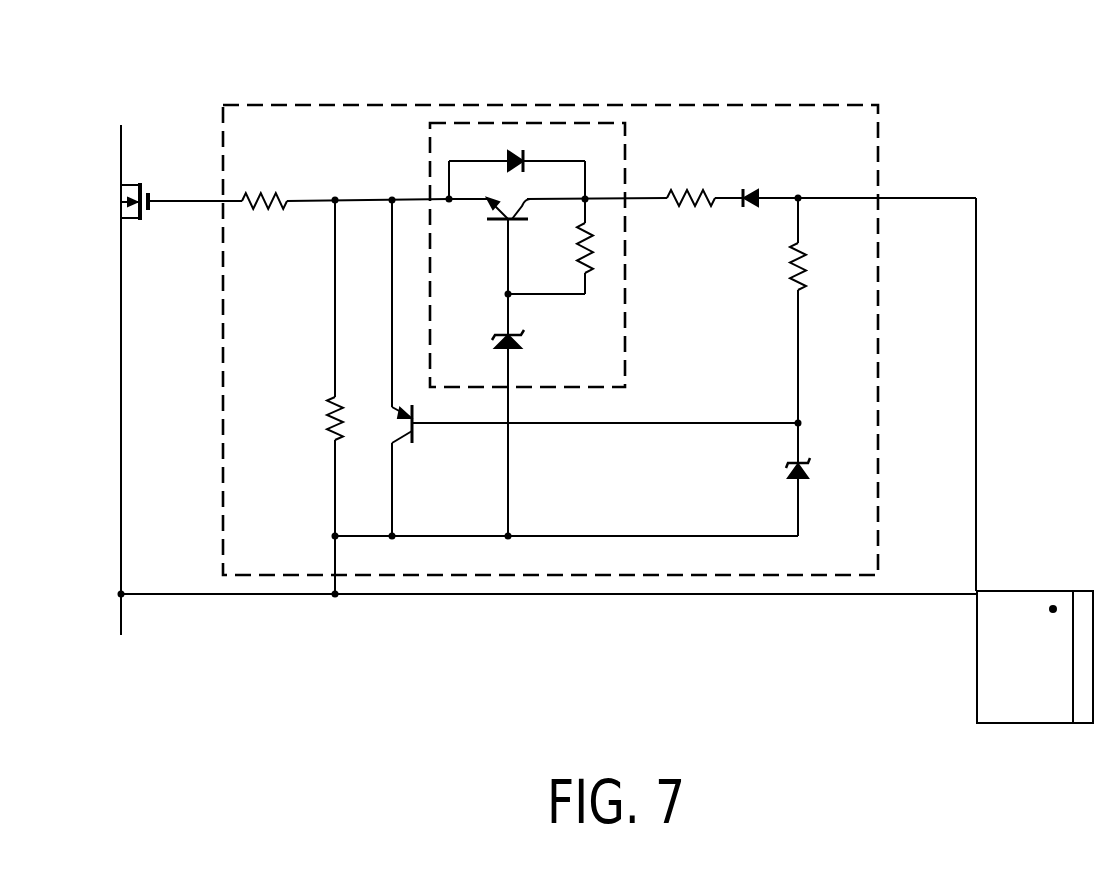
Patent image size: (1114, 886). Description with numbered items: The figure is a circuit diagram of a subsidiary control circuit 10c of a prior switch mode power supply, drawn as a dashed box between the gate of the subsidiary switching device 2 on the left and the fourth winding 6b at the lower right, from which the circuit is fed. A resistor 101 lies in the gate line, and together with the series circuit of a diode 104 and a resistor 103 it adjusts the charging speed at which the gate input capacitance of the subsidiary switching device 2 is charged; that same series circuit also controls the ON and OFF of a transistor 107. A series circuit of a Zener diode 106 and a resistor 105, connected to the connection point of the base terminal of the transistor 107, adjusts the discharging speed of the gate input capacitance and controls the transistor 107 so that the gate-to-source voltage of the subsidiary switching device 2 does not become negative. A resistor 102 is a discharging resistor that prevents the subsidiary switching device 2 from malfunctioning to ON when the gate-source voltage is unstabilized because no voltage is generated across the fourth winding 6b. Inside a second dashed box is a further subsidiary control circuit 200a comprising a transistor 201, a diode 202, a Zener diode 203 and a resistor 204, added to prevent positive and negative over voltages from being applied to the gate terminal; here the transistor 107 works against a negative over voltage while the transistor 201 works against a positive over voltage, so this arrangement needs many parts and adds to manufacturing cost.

The subsidiary switching device 2 is at (119, 190).
The fourth winding 6b is at (1072, 678).
The subsidiary control circuit 10c is at (372, 105).
The resistor 101 is at (287, 193).
The resistor 102 is at (330, 415).
The resistor 103 is at (678, 204).
The diode 104 is at (752, 192).
The resistor 105 is at (800, 304).
The Zener diode 106 is at (786, 472).
The transistor 107 is at (418, 430).
The subsidiary control circuit 200a is at (625, 318).
The transistor 201 is at (498, 222).
The diode 202 is at (515, 155).
The Zener diode 203 is at (520, 332).
The resistor 204 is at (594, 250).